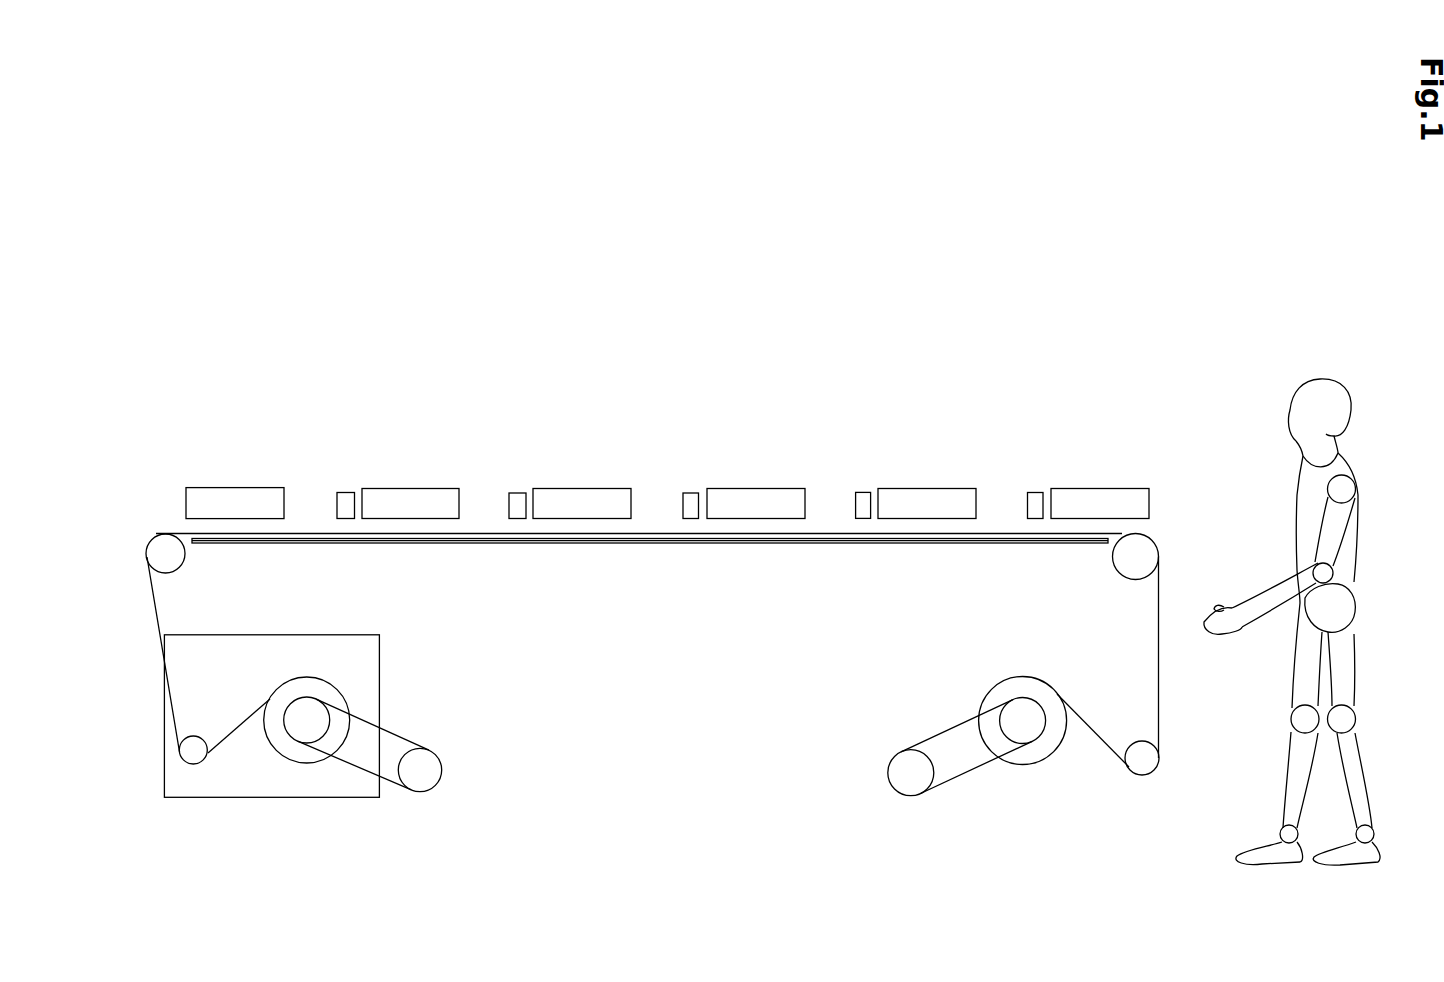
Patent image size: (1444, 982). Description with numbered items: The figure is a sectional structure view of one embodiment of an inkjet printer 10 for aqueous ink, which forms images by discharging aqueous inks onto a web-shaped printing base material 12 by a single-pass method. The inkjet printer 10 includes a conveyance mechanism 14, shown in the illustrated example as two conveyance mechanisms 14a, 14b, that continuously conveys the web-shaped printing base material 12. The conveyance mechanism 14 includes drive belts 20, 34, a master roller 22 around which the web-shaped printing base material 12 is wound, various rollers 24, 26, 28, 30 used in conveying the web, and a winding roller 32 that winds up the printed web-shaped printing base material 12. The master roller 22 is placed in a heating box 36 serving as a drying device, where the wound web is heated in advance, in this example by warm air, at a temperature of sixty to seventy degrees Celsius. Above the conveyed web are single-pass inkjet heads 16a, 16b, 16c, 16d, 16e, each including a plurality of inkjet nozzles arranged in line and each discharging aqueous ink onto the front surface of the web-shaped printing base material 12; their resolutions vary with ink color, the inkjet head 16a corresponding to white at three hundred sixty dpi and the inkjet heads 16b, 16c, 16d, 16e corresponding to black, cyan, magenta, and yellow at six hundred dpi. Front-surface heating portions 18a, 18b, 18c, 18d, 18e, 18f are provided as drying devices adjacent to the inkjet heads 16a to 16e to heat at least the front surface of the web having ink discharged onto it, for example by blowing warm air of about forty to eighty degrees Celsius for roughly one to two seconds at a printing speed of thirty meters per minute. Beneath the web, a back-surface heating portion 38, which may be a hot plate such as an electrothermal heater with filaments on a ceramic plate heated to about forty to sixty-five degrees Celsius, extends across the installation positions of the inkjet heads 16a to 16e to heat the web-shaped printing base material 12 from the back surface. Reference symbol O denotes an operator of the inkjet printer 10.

The inkjet printer 10 is at (1202, 287).
The web-shaped printing base material 12 is at (209, 751).
The conveyance mechanism 14 is at (436, 780).
The conveyance mechanism 14a is at (433, 790).
The conveyance mechanism 14b is at (905, 788).
The single-pass inkjet head 16a is at (347, 491).
The single-pass inkjet head 16b is at (522, 497).
The single-pass inkjet head 16c is at (692, 497).
The single-pass inkjet head 16d is at (864, 497).
The single-pass inkjet head 16e is at (1037, 497).
The front-surface heating portion 18a is at (231, 499).
The front-surface heating portion 18b is at (414, 497).
The front-surface heating portion 18c is at (582, 497).
The front-surface heating portion 18d is at (742, 497).
The front-surface heating portion 18e is at (935, 497).
The front-surface heating portion 18f is at (1107, 497).
The drive belt 20 is at (397, 732).
The master roller 22 is at (305, 735).
The roller 24 is at (185, 745).
The roller 26 is at (149, 540).
The roller 28 is at (1146, 536).
The roller 30 is at (1146, 758).
The winding roller 32 is at (1034, 728).
The drive belt 34 is at (928, 737).
The heating box 36 is at (380, 650).
The back-surface heating portion 38 is at (617, 543).
The operator O is at (1378, 406).